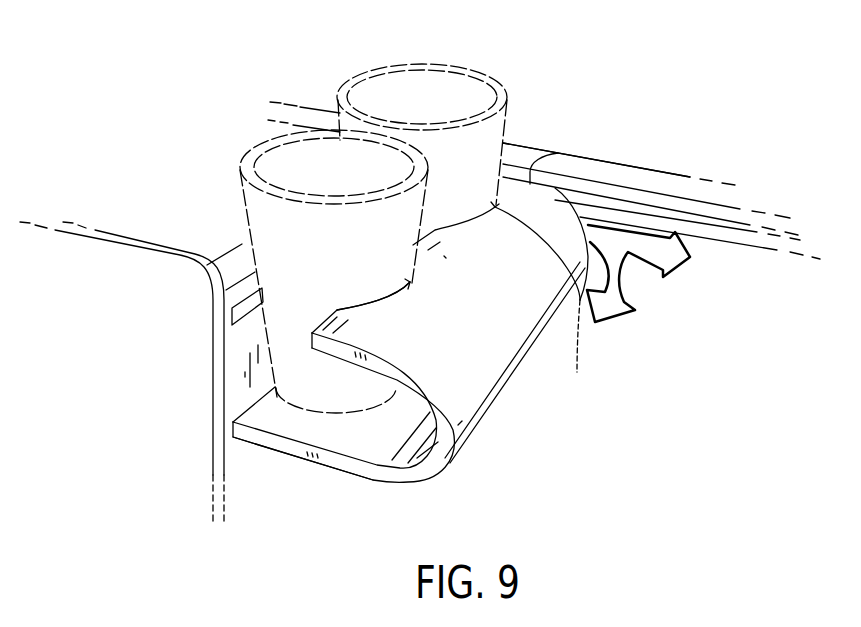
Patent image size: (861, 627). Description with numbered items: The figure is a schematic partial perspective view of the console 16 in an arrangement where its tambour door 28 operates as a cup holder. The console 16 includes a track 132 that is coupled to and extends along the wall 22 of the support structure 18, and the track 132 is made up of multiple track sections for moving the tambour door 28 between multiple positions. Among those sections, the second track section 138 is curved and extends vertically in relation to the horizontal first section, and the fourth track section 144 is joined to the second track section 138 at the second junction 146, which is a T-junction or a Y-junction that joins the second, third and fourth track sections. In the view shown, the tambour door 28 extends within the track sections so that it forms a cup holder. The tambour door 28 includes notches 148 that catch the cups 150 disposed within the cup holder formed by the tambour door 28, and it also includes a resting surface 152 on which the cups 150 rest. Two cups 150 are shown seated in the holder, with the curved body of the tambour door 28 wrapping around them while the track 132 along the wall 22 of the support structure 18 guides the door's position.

The console 16 is at (100, 85).
The support structure 18 is at (104, 240).
The wall 22 is at (678, 183).
The tambour door 28 is at (437, 457).
The track 132 is at (618, 150).
The second track section 138 is at (587, 218).
The fourth track section 144 is at (727, 233).
The second junction 146 is at (582, 172).
The notches 148 is at (410, 282).
The cups 150 is at (362, 75).
The resting surface 152 is at (360, 430).